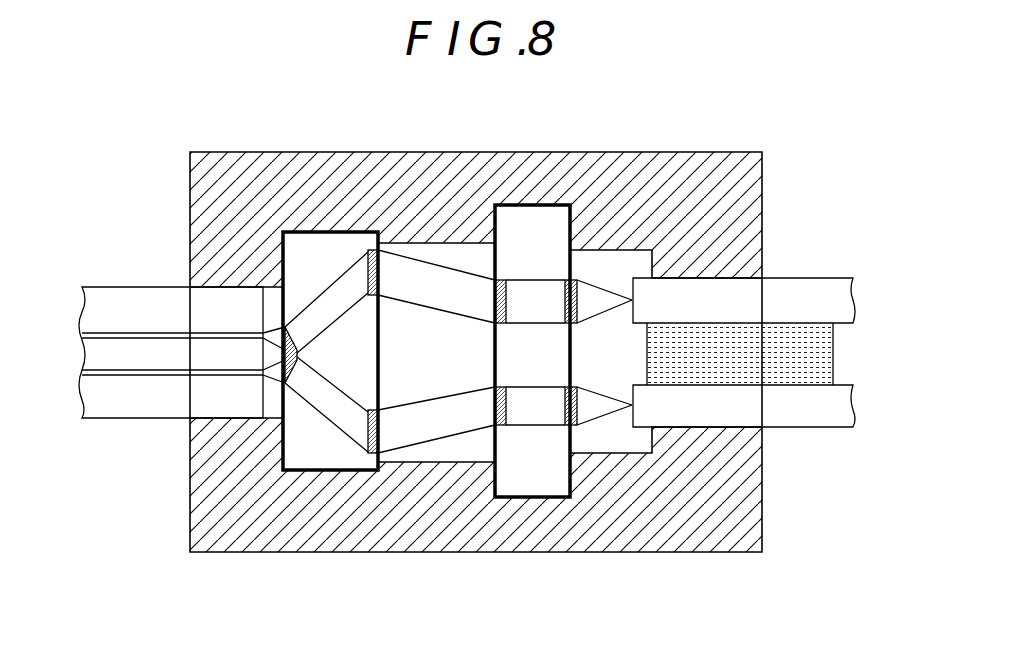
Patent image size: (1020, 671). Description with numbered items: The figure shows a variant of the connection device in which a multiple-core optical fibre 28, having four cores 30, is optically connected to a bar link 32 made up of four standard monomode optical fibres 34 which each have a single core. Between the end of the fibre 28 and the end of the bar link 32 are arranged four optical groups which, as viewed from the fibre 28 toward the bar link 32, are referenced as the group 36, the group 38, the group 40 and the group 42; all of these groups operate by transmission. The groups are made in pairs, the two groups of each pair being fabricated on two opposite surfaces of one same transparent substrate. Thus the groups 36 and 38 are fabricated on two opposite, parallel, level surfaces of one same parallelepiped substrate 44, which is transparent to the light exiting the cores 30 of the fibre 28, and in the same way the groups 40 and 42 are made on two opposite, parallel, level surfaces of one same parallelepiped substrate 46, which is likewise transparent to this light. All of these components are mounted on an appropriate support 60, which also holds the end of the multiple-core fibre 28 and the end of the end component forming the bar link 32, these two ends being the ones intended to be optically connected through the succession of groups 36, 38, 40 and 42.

The multiple-core optical fibre 28 is at (121, 284).
The cores 30 is at (143, 335).
The bar link 32 is at (820, 271).
The monomode optical fibres 34 is at (852, 310).
The group 36 is at (300, 354).
The group 38 is at (383, 273).
The group 40 is at (490, 408).
The group 42 is at (579, 404).
The parallelepiped substrate 44 is at (328, 255).
The parallelepiped substrate 46 is at (533, 228).
The support 60 is at (427, 175).